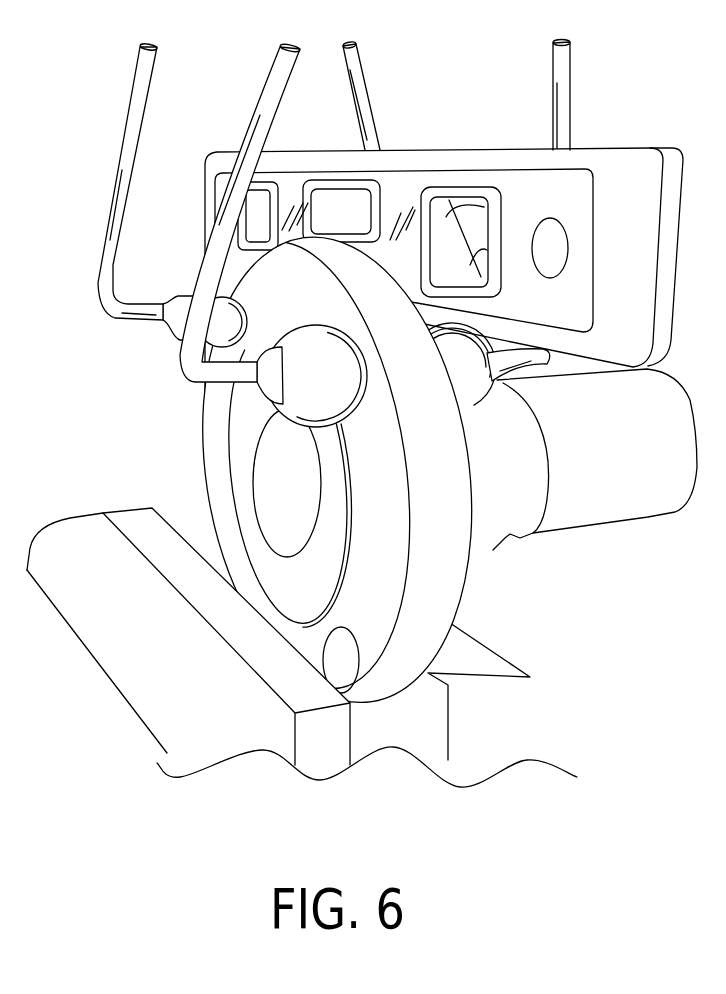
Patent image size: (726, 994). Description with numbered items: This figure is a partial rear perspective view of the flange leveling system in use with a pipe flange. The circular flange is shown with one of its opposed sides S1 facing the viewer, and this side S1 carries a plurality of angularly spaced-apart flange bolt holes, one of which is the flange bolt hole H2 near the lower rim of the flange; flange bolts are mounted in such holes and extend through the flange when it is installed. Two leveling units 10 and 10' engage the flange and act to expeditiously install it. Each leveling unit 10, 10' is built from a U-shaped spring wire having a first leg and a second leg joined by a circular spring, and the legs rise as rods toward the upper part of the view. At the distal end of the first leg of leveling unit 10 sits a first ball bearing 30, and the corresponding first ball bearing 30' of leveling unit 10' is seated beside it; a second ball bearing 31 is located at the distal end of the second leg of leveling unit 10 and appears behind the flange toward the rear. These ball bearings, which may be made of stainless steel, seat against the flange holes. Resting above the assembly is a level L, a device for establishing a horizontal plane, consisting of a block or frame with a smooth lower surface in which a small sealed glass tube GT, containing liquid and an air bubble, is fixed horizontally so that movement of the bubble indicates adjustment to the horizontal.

The leveling unit 10 is at (315, 200).
The leveling unit 10' is at (351, 185).
The glass tube GT is at (345, 230).
The level L is at (590, 160).
The first ball bearing 30' is at (243, 309).
The first ball bearing 30 is at (323, 399).
The second ball bearing 31 is at (468, 396).
The side of flange S1 is at (394, 566).
The flange bolt hole H2 is at (343, 652).